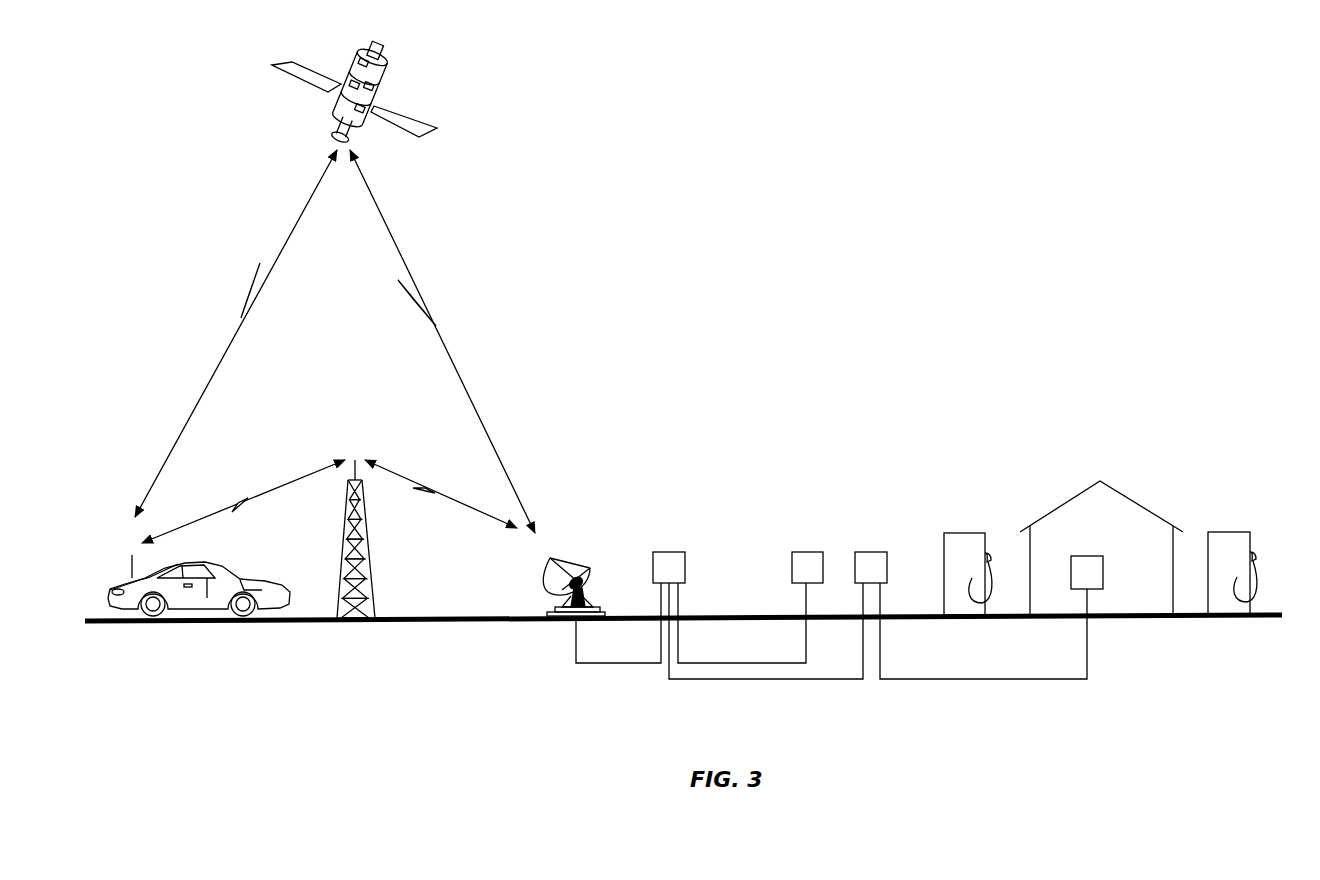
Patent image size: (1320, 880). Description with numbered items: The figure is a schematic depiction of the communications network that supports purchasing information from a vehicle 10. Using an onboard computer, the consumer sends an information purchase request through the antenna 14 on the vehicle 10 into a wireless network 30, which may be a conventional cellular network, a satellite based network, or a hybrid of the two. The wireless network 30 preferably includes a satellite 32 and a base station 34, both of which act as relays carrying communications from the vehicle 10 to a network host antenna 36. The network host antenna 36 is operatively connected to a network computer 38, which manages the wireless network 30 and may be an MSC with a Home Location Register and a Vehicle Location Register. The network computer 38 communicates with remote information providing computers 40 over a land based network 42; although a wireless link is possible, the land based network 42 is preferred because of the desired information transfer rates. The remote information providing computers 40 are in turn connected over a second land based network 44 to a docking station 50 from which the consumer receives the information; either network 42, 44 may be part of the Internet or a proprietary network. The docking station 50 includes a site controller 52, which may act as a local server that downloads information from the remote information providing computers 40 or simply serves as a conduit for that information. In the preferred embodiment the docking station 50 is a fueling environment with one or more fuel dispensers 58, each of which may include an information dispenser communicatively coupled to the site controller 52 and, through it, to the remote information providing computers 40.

The vehicle 10 is at (153, 652).
The antenna 14 is at (129, 571).
The wireless network 30 is at (362, 330).
The satellite 32 is at (443, 68).
The base station 34 is at (378, 573).
The network host antenna 36 is at (585, 562).
The network computer 38 is at (673, 552).
The remote information providing computers 40 is at (811, 552).
The land based network 42 is at (722, 663).
The second land based network 44 is at (967, 678).
The docking station 50 is at (1101, 491).
The site controller 52 is at (1090, 556).
The fuel dispensers 58 is at (963, 533).